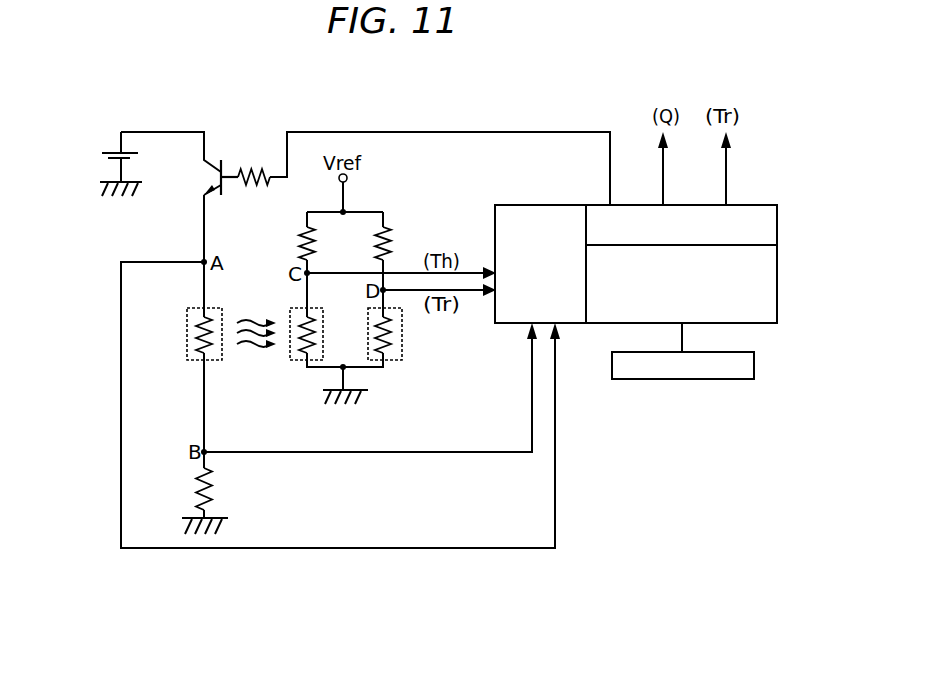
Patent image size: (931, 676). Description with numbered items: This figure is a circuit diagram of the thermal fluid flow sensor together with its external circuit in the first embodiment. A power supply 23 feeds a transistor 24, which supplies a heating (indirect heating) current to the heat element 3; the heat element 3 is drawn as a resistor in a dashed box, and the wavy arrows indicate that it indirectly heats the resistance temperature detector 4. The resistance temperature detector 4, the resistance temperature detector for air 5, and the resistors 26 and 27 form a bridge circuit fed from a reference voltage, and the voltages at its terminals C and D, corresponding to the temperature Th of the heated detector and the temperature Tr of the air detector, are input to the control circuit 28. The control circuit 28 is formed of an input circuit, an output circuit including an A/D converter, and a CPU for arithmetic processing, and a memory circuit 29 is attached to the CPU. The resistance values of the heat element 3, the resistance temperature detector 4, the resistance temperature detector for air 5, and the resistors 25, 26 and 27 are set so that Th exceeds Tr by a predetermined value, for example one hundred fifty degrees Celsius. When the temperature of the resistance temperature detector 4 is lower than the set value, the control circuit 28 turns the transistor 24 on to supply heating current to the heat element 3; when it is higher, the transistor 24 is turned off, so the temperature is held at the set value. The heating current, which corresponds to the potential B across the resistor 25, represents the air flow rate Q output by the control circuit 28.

The heat element 3 is at (187, 335).
The resistance temperature detector 4 is at (295, 362).
The resistance temperature detector for air 5 is at (404, 352).
The power supply 23 is at (101, 160).
The transistor 24 is at (229, 160).
The resistor 25 is at (222, 487).
The resistor 26 is at (297, 241).
The resistor 27 is at (393, 240).
The control circuit 28 is at (779, 232).
The memory circuit 29 is at (652, 381).